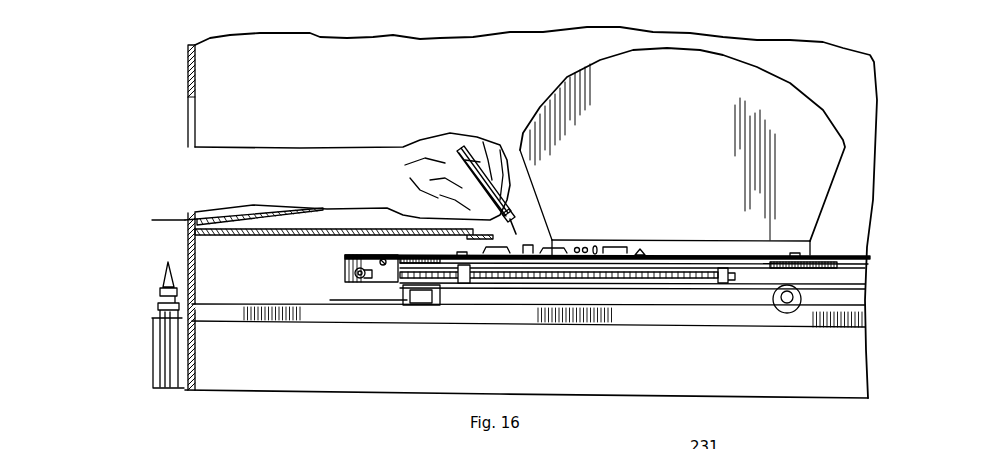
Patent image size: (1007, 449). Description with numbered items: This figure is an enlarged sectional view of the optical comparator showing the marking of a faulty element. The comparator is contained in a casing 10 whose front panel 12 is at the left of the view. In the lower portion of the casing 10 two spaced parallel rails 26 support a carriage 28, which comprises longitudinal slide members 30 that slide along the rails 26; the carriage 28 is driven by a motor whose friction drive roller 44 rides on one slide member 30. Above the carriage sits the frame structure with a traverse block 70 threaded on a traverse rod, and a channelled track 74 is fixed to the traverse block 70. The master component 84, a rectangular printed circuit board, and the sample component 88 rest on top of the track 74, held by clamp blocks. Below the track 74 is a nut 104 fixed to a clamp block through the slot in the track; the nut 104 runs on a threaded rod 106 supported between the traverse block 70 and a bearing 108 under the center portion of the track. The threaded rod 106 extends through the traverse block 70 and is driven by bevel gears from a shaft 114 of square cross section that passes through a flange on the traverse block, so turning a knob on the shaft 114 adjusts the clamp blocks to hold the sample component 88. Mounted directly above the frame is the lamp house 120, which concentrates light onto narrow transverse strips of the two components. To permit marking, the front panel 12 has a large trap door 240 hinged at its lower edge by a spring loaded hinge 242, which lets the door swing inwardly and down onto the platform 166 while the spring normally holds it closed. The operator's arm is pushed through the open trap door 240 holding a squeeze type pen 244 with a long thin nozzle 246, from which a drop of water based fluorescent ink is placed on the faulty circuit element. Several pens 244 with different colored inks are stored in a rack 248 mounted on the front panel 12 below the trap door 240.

The casing 10 is at (313, 393).
The front panel 12 is at (187, 57).
The rails 26 is at (310, 320).
The carriage 28 is at (507, 327).
The slide members 30 is at (723, 320).
The friction drive roller 44 is at (787, 305).
The traverse block 70 is at (372, 260).
The channelled track 74 is at (767, 265).
The master component 84 is at (818, 257).
The sample component 88 is at (632, 255).
The nut 104 is at (473, 282).
The threaded rod 106 is at (650, 277).
The bearing 108 is at (723, 280).
The shaft 114 is at (350, 275).
The lamp house 120 is at (810, 93).
The platform 166 is at (263, 235).
The trap door 240 is at (257, 212).
The spring loaded hinge 242 is at (190, 215).
The squeeze type pen 244 is at (463, 147).
The nozzle 246 is at (518, 233).
The rack 248 is at (152, 389).